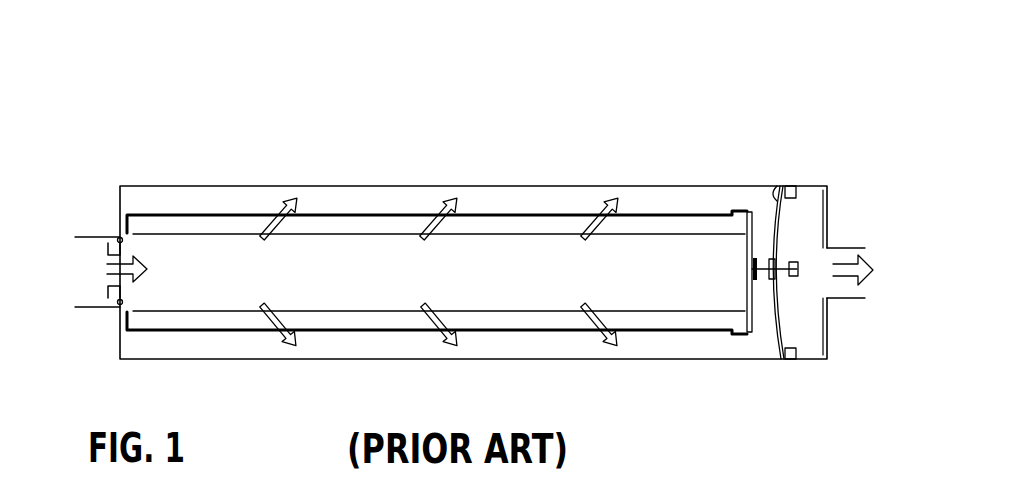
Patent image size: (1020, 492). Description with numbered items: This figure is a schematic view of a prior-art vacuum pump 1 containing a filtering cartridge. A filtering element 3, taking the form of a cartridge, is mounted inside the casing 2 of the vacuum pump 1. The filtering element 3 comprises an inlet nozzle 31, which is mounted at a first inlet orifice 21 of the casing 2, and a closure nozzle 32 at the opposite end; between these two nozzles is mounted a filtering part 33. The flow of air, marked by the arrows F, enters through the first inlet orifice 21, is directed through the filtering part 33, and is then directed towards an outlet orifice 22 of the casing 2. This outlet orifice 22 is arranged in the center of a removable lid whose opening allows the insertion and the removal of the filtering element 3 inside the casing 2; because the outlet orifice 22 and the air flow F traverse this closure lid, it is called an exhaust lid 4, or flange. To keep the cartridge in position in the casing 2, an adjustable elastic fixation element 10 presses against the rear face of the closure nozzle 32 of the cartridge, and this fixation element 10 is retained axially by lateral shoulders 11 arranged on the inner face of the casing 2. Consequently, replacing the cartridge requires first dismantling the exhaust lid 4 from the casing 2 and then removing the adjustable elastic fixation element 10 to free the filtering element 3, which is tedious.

The vacuum pump 1 is at (478, 115).
The casing 2 is at (680, 186).
The filtering element 3 is at (163, 207).
The exhaust lid 4 is at (832, 215).
The adjustable elastic fixation element 10 is at (775, 187).
The lateral shoulders 11 is at (790, 360).
The first inlet orifice 21 is at (79, 249).
The outlet orifice 22 is at (906, 218).
The inlet nozzle 31 is at (120, 307).
The closure nozzle 32 is at (750, 298).
The filtering part 33 is at (642, 322).